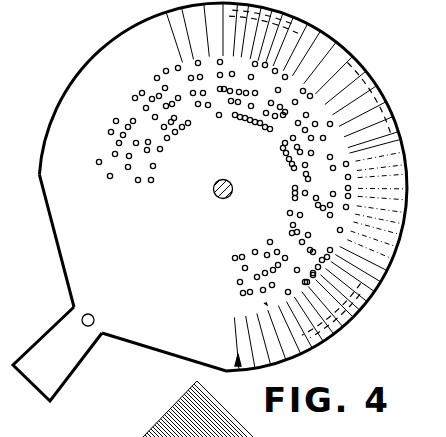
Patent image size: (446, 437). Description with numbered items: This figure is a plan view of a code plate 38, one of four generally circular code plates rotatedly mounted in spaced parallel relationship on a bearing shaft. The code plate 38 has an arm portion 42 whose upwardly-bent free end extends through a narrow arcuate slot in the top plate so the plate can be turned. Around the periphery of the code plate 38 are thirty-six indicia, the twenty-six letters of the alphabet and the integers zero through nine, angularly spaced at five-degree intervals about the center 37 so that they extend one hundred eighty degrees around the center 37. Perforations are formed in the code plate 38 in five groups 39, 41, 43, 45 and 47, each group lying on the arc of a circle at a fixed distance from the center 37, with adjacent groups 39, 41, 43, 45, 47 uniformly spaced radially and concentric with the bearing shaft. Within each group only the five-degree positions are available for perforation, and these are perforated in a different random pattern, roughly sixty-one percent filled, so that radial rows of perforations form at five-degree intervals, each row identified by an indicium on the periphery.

The center 37 is at (231, 184).
The code plate 38 is at (148, 274).
The group of perforations 39 is at (232, 258).
The group of perforations 41 is at (242, 268).
The arm portion 42 is at (58, 373).
The group of perforations 43 is at (237, 282).
The group of perforations 45 is at (240, 293).
The group of perforations 47 is at (264, 303).